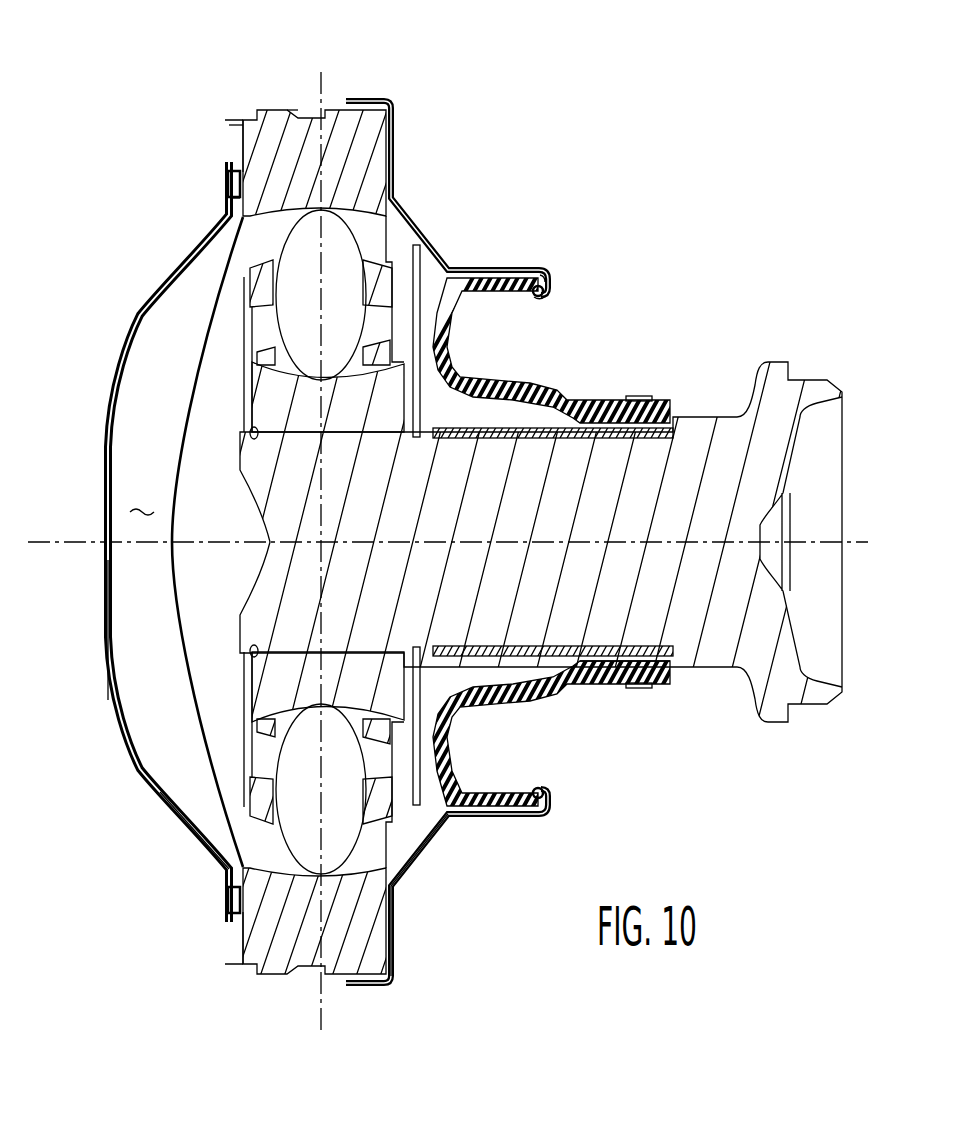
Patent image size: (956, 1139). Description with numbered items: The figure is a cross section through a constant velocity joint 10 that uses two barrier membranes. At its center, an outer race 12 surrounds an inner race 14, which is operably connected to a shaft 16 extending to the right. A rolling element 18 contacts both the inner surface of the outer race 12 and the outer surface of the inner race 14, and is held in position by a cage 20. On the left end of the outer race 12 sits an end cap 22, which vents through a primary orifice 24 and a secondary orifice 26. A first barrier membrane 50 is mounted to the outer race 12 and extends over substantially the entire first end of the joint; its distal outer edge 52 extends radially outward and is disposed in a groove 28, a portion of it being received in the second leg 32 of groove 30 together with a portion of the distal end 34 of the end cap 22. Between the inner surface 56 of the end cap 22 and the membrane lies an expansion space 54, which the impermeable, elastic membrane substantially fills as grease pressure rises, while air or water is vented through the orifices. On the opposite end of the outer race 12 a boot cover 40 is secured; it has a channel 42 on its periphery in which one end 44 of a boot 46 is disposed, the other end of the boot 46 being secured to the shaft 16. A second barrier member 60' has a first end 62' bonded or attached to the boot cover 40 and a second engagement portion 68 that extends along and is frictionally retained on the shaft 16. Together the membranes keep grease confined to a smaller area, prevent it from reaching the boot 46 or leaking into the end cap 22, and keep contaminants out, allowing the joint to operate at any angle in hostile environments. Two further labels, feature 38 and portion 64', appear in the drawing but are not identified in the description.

The constant velocity joint 10 is at (486, 158).
The outer race 12 is at (283, 127).
The inner race 14 is at (405, 400).
The shaft 16 is at (698, 432).
The rolling element 18 is at (392, 190).
The cage 20 is at (343, 268).
The end cap 22 is at (118, 723).
The primary orifice 24 is at (108, 540).
The secondary orifice 26 is at (191, 836).
The groove 28 is at (237, 166).
The groove 30 is at (229, 170).
The second leg 32 is at (236, 152).
The distal end 34 is at (232, 196).
The race outer surface 38 is at (307, 117).
The boot cover 40 is at (446, 268).
The channel 42 is at (548, 297).
The end of boot 44 is at (547, 266).
The boot 46 is at (500, 270).
The first barrier membrane 50 is at (177, 443).
The distal outer edge 52 is at (238, 868).
The expansion space 54 is at (142, 493).
The inner surface 56 is at (117, 692).
The second barrier member 60' is at (442, 855).
The first end 62' is at (421, 894).
The boot shaft end 64' is at (636, 731).
The second engagement portion 68 is at (533, 633).